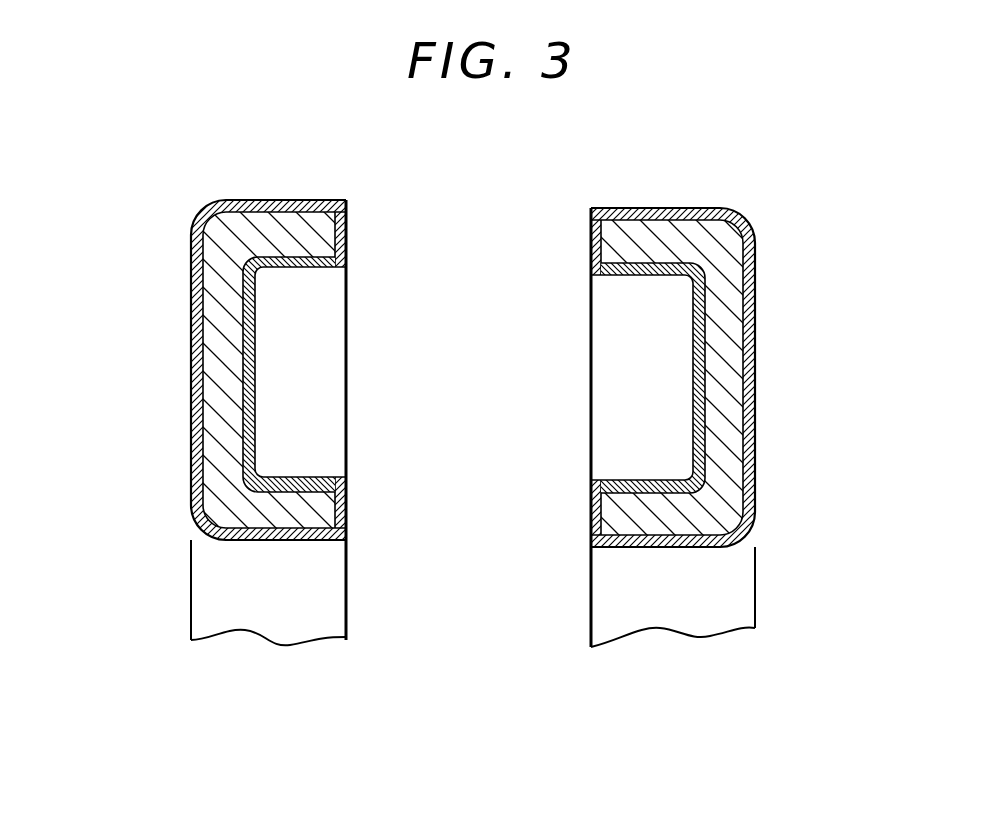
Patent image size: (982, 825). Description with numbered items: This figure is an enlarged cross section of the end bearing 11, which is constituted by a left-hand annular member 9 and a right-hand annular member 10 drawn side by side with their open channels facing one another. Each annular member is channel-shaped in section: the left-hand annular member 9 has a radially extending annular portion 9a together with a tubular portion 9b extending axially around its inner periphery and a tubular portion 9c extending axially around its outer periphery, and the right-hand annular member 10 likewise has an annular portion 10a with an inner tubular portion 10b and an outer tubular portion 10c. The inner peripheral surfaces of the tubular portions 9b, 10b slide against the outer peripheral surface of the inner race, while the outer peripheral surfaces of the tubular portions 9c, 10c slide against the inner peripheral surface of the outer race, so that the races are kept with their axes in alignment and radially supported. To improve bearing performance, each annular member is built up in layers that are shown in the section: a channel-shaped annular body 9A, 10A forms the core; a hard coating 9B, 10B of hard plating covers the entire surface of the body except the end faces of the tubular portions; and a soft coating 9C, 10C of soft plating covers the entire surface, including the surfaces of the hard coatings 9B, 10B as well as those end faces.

The annular member 9 is at (183, 402).
The annular body 9A is at (232, 370).
The hard coating 9B is at (250, 422).
The soft coating 9C is at (200, 300).
The annular portion 9a is at (228, 318).
The tubular portion 9b is at (305, 505).
The tubular portion 9c is at (292, 243).
The annular member 10 is at (766, 380).
The annular body 10A is at (713, 418).
The hard coating 10B is at (700, 402).
The soft coating 10C is at (755, 272).
The annular portion 10a is at (720, 341).
The tubular portion 10b is at (655, 515).
The tubular portion 10c is at (660, 243).
The end bearing 11 is at (186, 203).